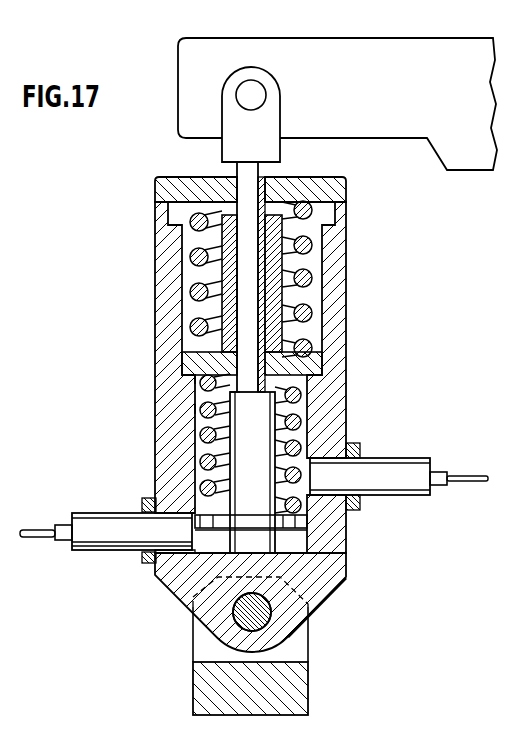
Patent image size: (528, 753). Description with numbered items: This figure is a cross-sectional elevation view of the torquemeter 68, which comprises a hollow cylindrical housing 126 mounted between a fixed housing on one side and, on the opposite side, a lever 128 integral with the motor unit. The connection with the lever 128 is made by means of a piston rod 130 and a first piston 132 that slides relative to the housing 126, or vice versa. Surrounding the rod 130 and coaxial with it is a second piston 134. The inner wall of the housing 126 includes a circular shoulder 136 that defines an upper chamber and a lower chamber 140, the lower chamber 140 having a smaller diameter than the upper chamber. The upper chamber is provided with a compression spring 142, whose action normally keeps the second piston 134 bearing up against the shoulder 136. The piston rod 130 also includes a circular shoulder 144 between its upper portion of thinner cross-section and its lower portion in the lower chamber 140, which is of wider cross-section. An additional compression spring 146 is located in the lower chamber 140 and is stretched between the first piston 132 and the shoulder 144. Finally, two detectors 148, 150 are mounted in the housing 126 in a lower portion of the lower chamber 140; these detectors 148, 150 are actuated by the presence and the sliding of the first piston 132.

The lever 128 is at (357, 120).
The compression spring 142 is at (323, 196).
The torquemeter 68 is at (395, 290).
The piston rod 130 is at (247, 263).
The second piston 134 is at (183, 365).
The circular shoulder 136 is at (195, 379).
The additional compression spring 146 is at (240, 397).
The circular shoulder 144 is at (195, 410).
The housing 126 is at (340, 378).
The lower chamber 140 is at (297, 409).
The first piston 132 is at (317, 522).
The detector 148 is at (97, 538).
The detector 150 is at (403, 467).